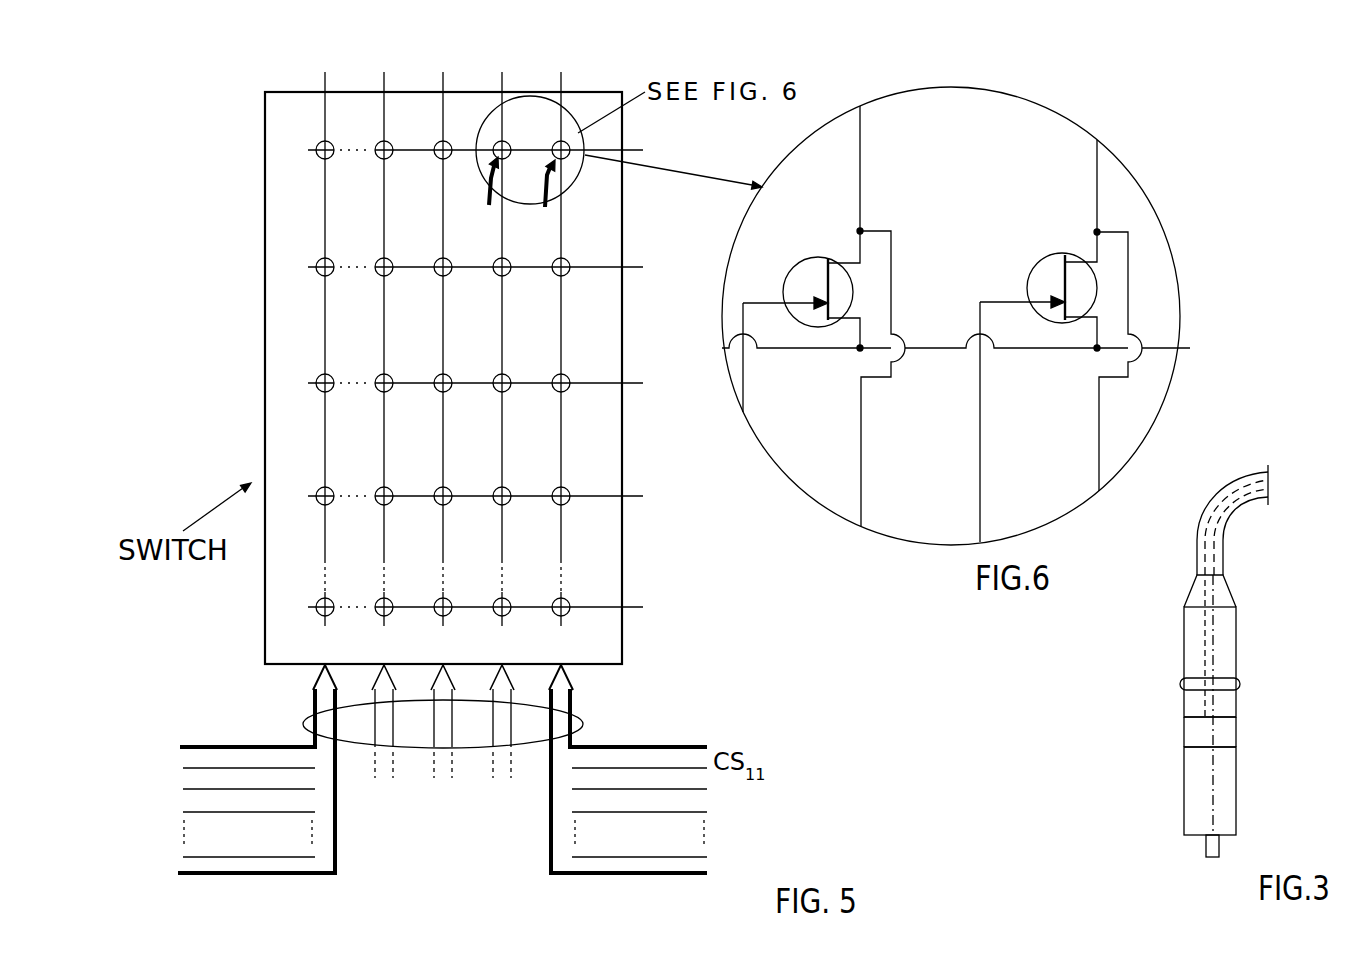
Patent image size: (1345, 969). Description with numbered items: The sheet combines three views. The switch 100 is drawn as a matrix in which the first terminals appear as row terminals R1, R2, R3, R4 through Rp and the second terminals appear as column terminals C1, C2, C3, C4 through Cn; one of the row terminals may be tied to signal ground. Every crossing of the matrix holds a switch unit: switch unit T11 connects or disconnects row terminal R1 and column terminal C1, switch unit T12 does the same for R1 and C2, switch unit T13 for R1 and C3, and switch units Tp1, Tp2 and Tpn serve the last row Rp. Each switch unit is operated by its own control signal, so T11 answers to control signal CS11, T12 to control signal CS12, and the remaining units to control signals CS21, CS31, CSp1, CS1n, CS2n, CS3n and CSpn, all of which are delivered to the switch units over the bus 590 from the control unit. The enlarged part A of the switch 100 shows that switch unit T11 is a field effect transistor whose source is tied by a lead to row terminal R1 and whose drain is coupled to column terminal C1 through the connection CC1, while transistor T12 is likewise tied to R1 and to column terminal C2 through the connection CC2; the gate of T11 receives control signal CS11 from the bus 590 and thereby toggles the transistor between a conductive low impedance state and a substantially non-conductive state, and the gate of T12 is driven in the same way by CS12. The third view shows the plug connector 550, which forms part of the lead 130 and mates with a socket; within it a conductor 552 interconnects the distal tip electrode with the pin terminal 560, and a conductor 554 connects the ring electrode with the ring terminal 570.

In FIG. 5, the switch 100 is at (250, 384).
In FIG. 5, the data bus 590 is at (579, 722).
In FIG. 3, the lead 130 is at (1252, 497).
In FIG. 3, the conductor 554 is at (1206, 626).
In FIG. 3, the plug connector 550 is at (1212, 721).
In FIG. 3, the ring terminal 570 is at (1184, 742).
In FIG. 3, the conductor 552 is at (1213, 783).
In FIG. 3, the pin terminal 560 is at (1219, 849).
In FIG. 5, the enlarged part A is at (576, 113).
In FIG. 6, the enlarged part A is at (1082, 125).
In FIG. 5, the column terminal C1 is at (561, 73).
In FIG. 6, the column terminal C1 is at (1097, 198).
In FIG. 5, the column terminal C2 is at (502, 73).
In FIG. 6, the column terminal C2 is at (859, 178).
In FIG. 5, the column terminal C3 is at (443, 73).
In FIG. 5, the column terminal C4 is at (384, 73).
In FIG. 5, the column terminal Cn is at (325, 73).
In FIG. 5, the row terminal R1 is at (643, 150).
In FIG. 6, the row terminal R1 is at (1181, 348).
In FIG. 5, the row terminal R2 is at (643, 267).
In FIG. 5, the row terminal R3 is at (643, 383).
In FIG. 5, the row terminal R4 is at (643, 496).
In FIG. 5, the row terminal Rp is at (643, 607).
In FIG. 5, the switch unit T11 is at (554, 148).
In FIG. 6, the switch unit T11 is at (1042, 261).
In FIG. 5, the switch unit T12 is at (498, 139).
In FIG. 6, the switch unit T12 is at (811, 268).
In FIG. 5, the switch unit T13 is at (440, 143).
In FIG. 5, the switch unit Tp1 is at (555, 602).
In FIG. 5, the switch unit Tp2 is at (496, 602).
In FIG. 5, the switch unit Tpn is at (321, 602).
In FIG. 5, the control signal CS11 is at (545, 206).
In FIG. 6, the control signal CS11 is at (980, 468).
In FIG. 6, the control signal CS12 is at (745, 398).
In FIG. 6, the column connection line CC1 is at (1097, 402).
In FIG. 6, the column connection line CC2 is at (872, 400).
In FIG. 5, the control signal CS1n is at (217, 766).
In FIG. 5, the control signal CS2n is at (205, 789).
In FIG. 5, the control signal CS3n is at (218, 817).
In FIG. 5, the control signal CSpn is at (200, 855).
In FIG. 5, the control signal CS21 is at (668, 792).
In FIG. 5, the control signal CS31 is at (667, 819).
In FIG. 5, the control signal CSp1 is at (667, 857).